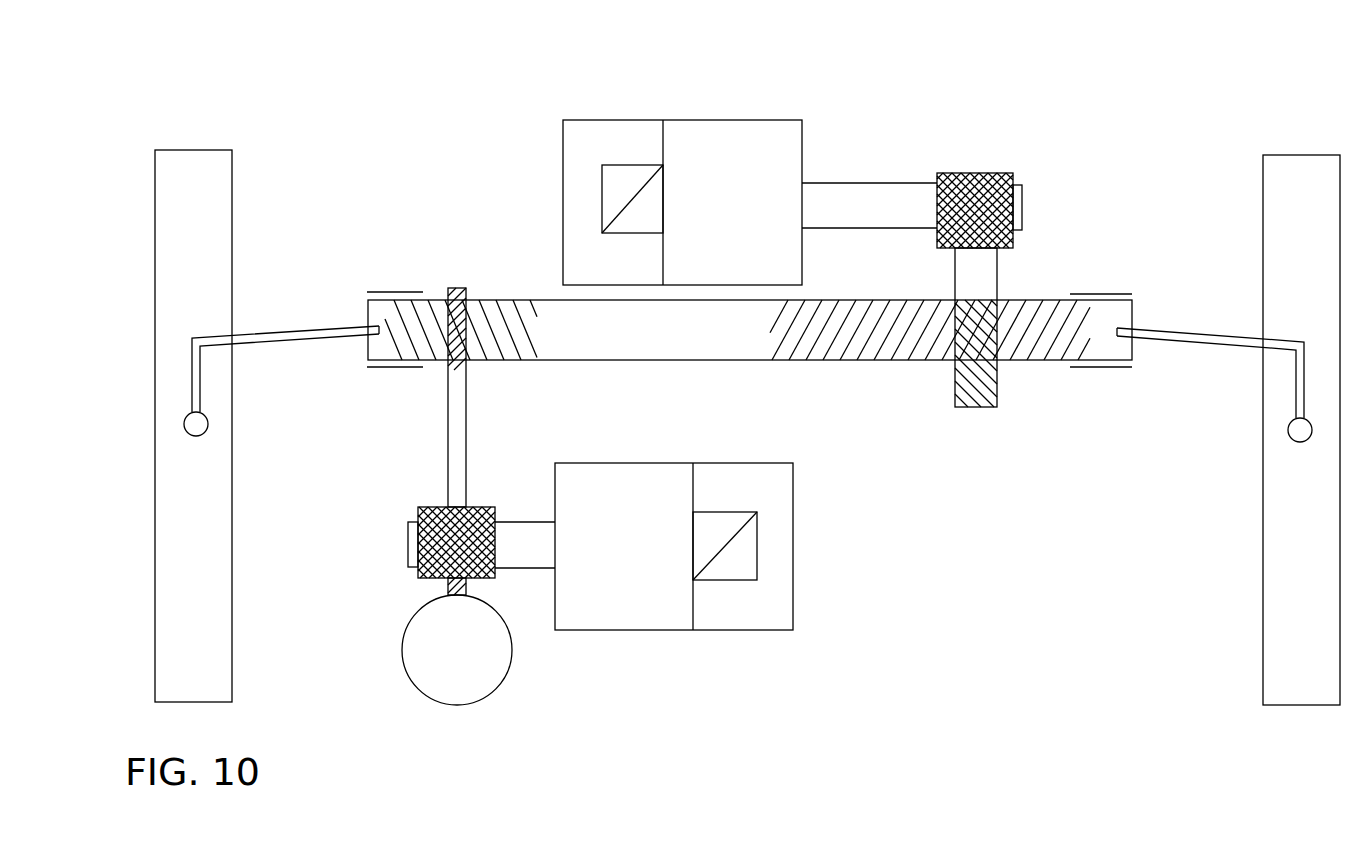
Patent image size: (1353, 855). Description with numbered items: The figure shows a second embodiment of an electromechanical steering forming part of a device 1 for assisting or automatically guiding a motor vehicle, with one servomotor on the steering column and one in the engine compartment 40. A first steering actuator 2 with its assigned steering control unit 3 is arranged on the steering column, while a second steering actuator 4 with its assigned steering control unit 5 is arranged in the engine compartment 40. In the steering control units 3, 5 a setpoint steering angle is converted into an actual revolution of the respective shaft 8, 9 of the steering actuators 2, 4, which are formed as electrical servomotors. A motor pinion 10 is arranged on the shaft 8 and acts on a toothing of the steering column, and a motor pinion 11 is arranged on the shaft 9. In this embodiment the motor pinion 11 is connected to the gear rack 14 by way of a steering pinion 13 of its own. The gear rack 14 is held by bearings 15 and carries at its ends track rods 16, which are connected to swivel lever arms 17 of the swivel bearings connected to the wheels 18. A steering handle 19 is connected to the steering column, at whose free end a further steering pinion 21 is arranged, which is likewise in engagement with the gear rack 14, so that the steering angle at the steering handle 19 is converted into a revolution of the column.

The device 1 is at (930, 128).
The first steering actuator 2 is at (610, 610).
The first steering control unit 3 is at (735, 607).
The second steering actuator 4 is at (627, 137).
The second steering control unit 5 is at (742, 138).
The shaft 8 is at (535, 540).
The shaft 9 is at (838, 202).
The motor pinion 10 is at (420, 567).
The motor pinion 11 is at (975, 200).
The steering pinion 13 is at (972, 410).
The gear rack 14 is at (665, 325).
The bearings 15 is at (400, 290).
The track rods 16 is at (310, 328).
The swivel lever arms 17 is at (200, 385).
The wheels 18 is at (202, 495).
The steering handle 19 is at (480, 680).
The steering pinion 21 is at (460, 368).
The engine compartment 40 is at (1093, 96).